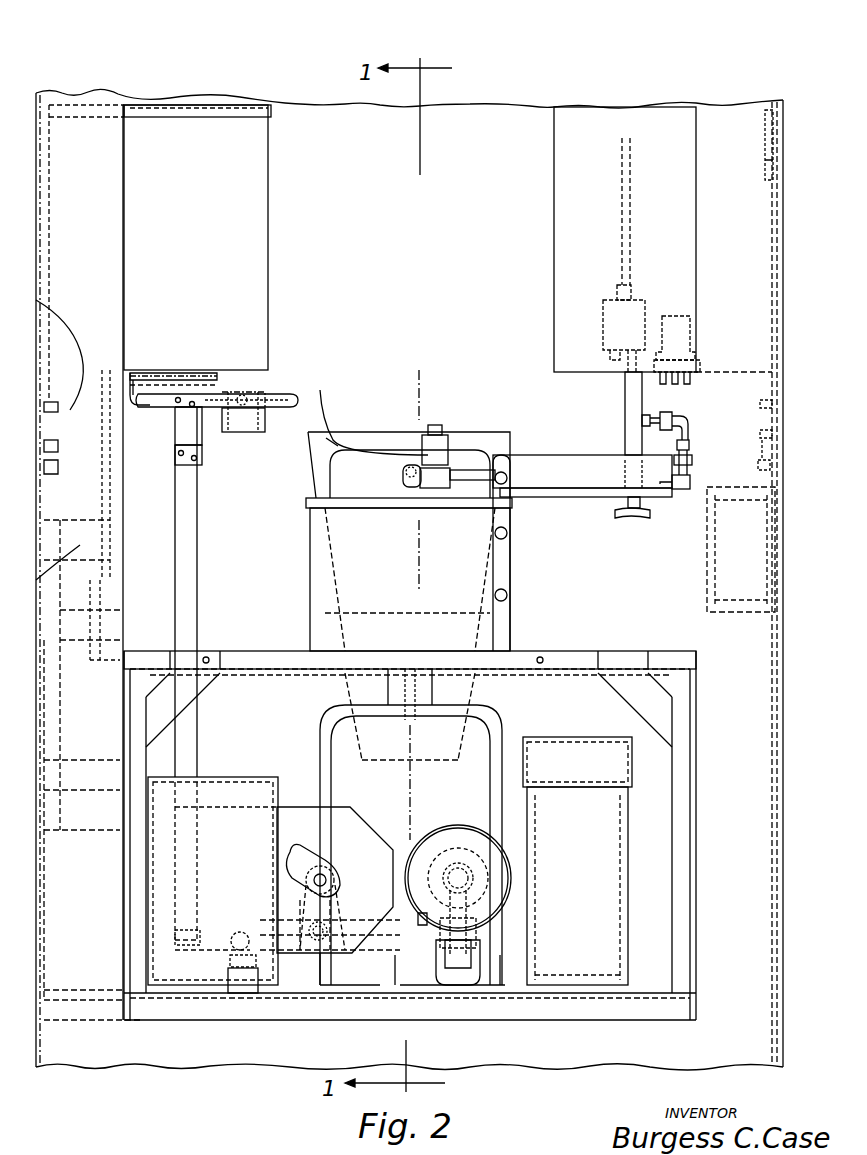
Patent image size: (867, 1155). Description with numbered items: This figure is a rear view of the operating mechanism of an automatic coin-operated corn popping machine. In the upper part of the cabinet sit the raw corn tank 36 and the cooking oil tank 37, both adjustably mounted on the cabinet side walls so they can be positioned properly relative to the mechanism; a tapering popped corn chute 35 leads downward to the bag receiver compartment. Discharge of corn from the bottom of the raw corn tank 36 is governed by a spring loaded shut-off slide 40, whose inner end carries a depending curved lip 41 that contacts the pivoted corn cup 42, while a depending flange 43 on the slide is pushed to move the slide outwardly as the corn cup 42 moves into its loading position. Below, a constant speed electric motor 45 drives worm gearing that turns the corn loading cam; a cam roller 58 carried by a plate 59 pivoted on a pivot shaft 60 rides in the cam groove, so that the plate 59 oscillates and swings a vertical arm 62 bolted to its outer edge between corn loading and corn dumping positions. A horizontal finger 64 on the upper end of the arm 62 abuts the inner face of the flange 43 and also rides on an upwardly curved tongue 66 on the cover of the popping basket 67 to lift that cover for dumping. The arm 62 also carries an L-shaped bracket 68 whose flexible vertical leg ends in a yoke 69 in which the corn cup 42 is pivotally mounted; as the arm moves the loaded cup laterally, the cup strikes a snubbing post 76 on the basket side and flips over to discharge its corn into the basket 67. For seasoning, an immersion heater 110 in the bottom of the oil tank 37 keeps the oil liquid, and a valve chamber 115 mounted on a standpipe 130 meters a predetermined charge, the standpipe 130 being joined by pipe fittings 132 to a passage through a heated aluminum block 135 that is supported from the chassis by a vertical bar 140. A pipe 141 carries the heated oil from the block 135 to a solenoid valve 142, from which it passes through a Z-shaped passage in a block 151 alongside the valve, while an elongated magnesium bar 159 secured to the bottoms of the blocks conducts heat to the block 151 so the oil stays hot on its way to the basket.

The popped corn chute 35 is at (470, 695).
The raw corn tank 36 is at (268, 232).
The cooking oil tank 37 is at (554, 218).
The shut-off slide 40 is at (178, 358).
The curved lip 41 is at (217, 393).
The corn cup 42 is at (262, 395).
The flange 43 is at (130, 408).
The electric motor 45 is at (457, 838).
The cam roller 58 is at (328, 912).
The plate 59 is at (360, 818).
The pivot shaft 60 is at (241, 932).
The vertical arm 62 is at (198, 611).
The finger 64 is at (170, 412).
The tongue 66 is at (322, 405).
The popping basket 67 is at (322, 499).
The L-shaped bracket 68 is at (203, 448).
The yoke 69 is at (250, 393).
The snubbing post 76 is at (330, 452).
The immersion heater 110 is at (672, 316).
The valve chamber 115 is at (603, 323).
The standpipe 130 is at (625, 394).
The pipe fittings 132 is at (690, 425).
The block 135 is at (556, 455).
The vertical bar 140 is at (511, 567).
The pipe 141 is at (470, 481).
The solenoid valve 142 is at (438, 448).
The block 151 is at (403, 482).
The bar 159 is at (580, 493).